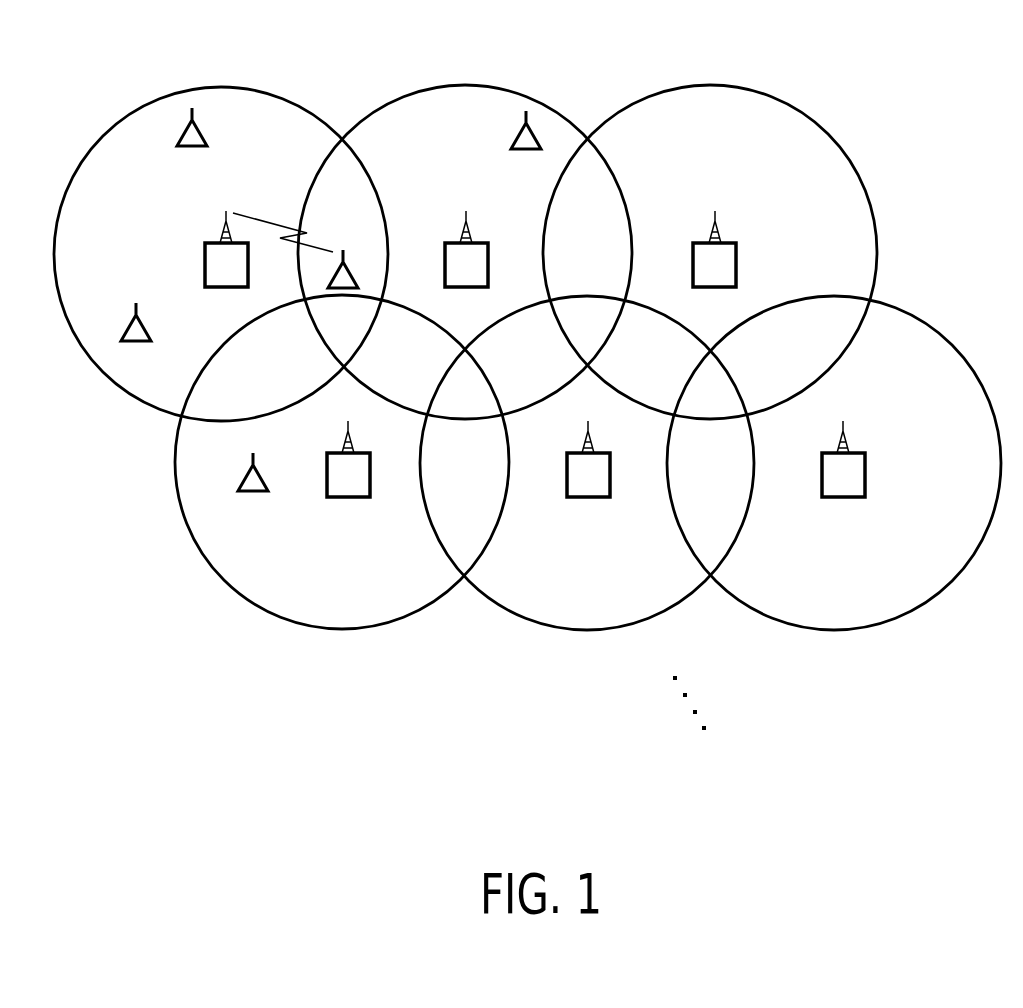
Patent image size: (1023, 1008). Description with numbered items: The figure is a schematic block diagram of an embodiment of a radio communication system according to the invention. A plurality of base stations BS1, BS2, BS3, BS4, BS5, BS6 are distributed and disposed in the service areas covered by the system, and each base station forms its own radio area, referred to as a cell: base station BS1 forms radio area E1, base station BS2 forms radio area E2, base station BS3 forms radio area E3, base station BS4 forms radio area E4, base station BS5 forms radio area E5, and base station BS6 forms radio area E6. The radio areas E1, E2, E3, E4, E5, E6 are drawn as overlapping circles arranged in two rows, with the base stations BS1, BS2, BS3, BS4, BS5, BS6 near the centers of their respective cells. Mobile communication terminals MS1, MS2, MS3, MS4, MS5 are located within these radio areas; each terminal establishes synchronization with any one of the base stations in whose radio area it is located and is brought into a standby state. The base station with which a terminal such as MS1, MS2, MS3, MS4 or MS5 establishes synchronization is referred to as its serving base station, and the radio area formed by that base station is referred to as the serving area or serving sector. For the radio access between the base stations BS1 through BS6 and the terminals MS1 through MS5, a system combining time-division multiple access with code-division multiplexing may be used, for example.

The radio area E1 is at (217, 86).
The radio area E2 is at (460, 85).
The radio area E3 is at (705, 85).
The radio area E4 is at (347, 631).
The radio area E5 is at (588, 632).
The radio area E6 is at (834, 632).
The base station BS1 is at (221, 269).
The base station BS2 is at (466, 269).
The base station BS3 is at (715, 269).
The base station BS4 is at (348, 477).
The base station BS5 is at (588, 477).
The base station BS6 is at (843, 477).
The mobile communication terminal MS1 is at (343, 291).
The mobile communication terminal MS2 is at (194, 149).
The mobile communication terminal MS3 is at (135, 340).
The mobile communication terminal MS4 is at (529, 150).
The mobile communication terminal MS5 is at (253, 492).